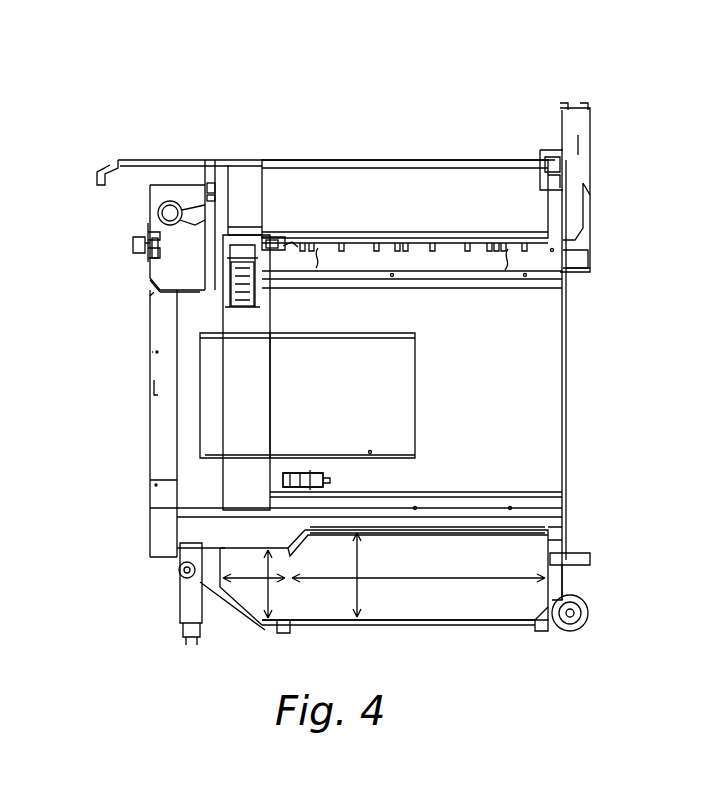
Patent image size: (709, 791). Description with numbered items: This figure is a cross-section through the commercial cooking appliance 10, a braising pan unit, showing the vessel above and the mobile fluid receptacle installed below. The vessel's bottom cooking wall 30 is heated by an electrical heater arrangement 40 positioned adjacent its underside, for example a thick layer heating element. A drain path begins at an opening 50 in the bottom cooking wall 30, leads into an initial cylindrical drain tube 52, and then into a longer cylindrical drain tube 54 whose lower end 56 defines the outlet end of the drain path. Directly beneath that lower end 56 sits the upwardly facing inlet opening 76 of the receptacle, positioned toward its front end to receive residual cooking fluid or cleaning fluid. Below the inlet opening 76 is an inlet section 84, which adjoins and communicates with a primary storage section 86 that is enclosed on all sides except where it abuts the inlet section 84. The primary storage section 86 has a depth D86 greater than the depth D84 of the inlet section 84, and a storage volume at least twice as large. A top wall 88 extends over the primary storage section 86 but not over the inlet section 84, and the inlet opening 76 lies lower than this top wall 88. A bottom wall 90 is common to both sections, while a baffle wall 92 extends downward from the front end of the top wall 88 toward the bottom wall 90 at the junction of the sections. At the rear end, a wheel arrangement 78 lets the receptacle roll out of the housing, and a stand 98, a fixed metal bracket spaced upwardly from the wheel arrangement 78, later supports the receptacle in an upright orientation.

The commercial cooking appliance 10 is at (343, 351).
The bottom cooking wall 30 is at (395, 233).
The electrical heater arrangement 40 is at (514, 254).
The opening 50 is at (270, 240).
The initial cylindrical drain tube 52 is at (300, 243).
The longer cylindrical drain tube 54 is at (228, 323).
The lower end 56 is at (258, 510).
The inlet opening 76 is at (237, 548).
The wheel arrangement 78 is at (580, 581).
The inlet section 84 is at (262, 590).
The primary storage section 86 is at (402, 582).
The top wall 88 is at (478, 527).
The bottom wall 90 is at (452, 622).
The baffle wall 92 is at (300, 522).
The stand 98 is at (587, 553).
The depth of inlet section D84 is at (262, 598).
The depth of primary storage section D86 is at (315, 562).